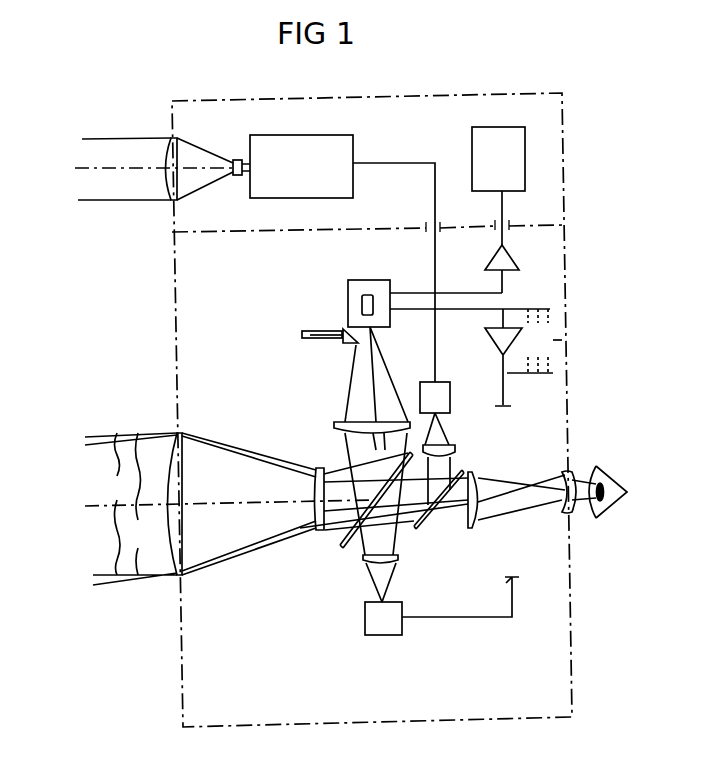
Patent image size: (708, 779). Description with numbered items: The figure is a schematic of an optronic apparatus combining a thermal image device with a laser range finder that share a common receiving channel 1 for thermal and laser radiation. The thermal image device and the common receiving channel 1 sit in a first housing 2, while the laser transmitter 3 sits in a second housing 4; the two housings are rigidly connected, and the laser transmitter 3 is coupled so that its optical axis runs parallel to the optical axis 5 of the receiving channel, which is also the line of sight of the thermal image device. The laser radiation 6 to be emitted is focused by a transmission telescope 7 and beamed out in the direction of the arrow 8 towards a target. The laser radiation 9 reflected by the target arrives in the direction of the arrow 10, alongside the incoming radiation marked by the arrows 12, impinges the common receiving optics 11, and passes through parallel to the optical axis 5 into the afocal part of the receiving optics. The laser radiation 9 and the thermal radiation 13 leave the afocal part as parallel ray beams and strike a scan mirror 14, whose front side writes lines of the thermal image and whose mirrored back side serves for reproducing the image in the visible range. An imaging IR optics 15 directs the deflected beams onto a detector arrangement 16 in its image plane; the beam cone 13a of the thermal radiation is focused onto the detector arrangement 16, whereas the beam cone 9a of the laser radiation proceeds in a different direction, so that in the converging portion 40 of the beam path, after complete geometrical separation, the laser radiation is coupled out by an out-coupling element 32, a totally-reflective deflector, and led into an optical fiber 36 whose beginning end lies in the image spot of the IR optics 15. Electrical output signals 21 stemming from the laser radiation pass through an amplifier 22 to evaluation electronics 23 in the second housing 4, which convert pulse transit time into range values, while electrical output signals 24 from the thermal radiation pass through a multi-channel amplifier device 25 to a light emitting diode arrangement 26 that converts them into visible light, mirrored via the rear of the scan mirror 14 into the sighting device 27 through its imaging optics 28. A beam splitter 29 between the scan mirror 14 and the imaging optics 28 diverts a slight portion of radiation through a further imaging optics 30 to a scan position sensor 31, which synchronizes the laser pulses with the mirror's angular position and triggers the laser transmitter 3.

The common receiving channel 1 is at (241, 531).
The first housing 2 is at (182, 700).
The laser transmitter 3 is at (325, 135).
The second housing 4 is at (455, 93).
The optical axis 5 is at (279, 507).
The laser radiation to be emitted 6 is at (109, 202).
The transmission telescope 7 is at (232, 160).
The arrow 8 is at (68, 173).
The reflected laser radiation 9 is at (338, 524).
The beam cone of laser radiation 9a is at (346, 378).
The arrow 10 is at (63, 513).
The common receiving optics 11 is at (175, 479).
The incident light rays 12 is at (64, 481).
The thermal radiation 13 is at (338, 465).
The beam cone of thermal radiation 13a is at (392, 378).
The scan mirror 14 is at (347, 552).
The imaging IR optics 15 is at (338, 425).
The detector arrangement 16 is at (350, 280).
The electrical output signals 21 is at (406, 292).
The amplifier 22 is at (511, 265).
The evaluation electronics 23 is at (515, 167).
The electrical output signals 24 is at (456, 311).
The multi-channel amplifier device 25 is at (562, 340).
The light emitting diode arrangement 26 is at (400, 628).
The sighting device 27 is at (584, 520).
The imaging optics 28 is at (562, 508).
The beam splitter 29 is at (419, 527).
The further imaging optics 30 is at (456, 450).
The scan position sensor 31 is at (451, 400).
The out-coupling element 32 is at (337, 319).
The optical fiber 36 is at (302, 334).
The converging portion of the beam path 40 is at (335, 361).